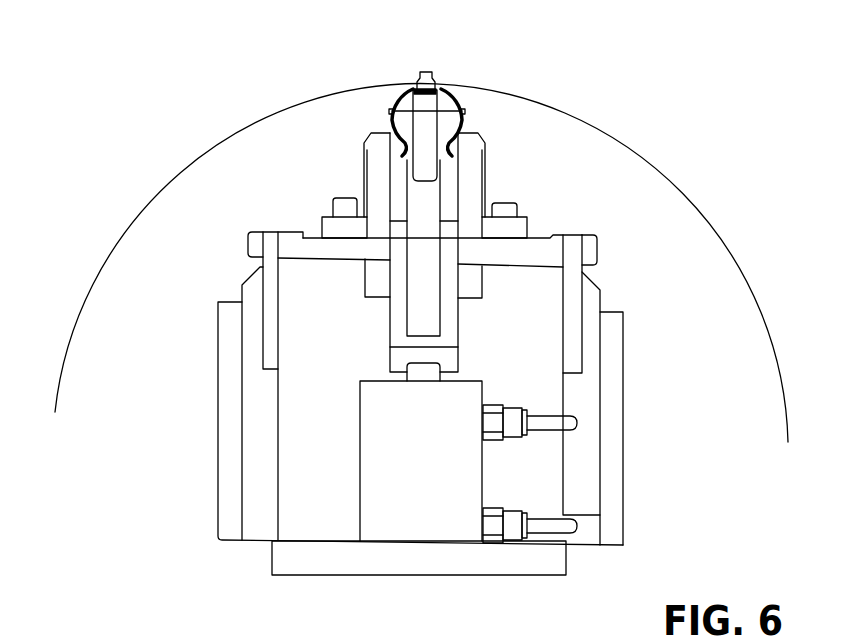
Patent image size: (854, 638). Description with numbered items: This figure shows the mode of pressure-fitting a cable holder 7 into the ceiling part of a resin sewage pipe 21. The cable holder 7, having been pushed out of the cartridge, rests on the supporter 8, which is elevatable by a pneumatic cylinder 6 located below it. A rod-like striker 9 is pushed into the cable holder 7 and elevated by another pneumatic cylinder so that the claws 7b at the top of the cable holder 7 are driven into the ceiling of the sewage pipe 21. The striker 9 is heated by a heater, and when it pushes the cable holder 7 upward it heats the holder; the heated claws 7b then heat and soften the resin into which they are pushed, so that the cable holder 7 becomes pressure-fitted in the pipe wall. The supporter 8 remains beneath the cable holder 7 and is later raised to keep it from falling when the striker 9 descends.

The pneumatic cylinder 6 is at (375, 458).
The cable holder 7 is at (448, 92).
The claws 7b is at (421, 69).
The supporter 8 is at (450, 317).
The striker 9 is at (422, 131).
The sewage pipe 21 is at (650, 163).